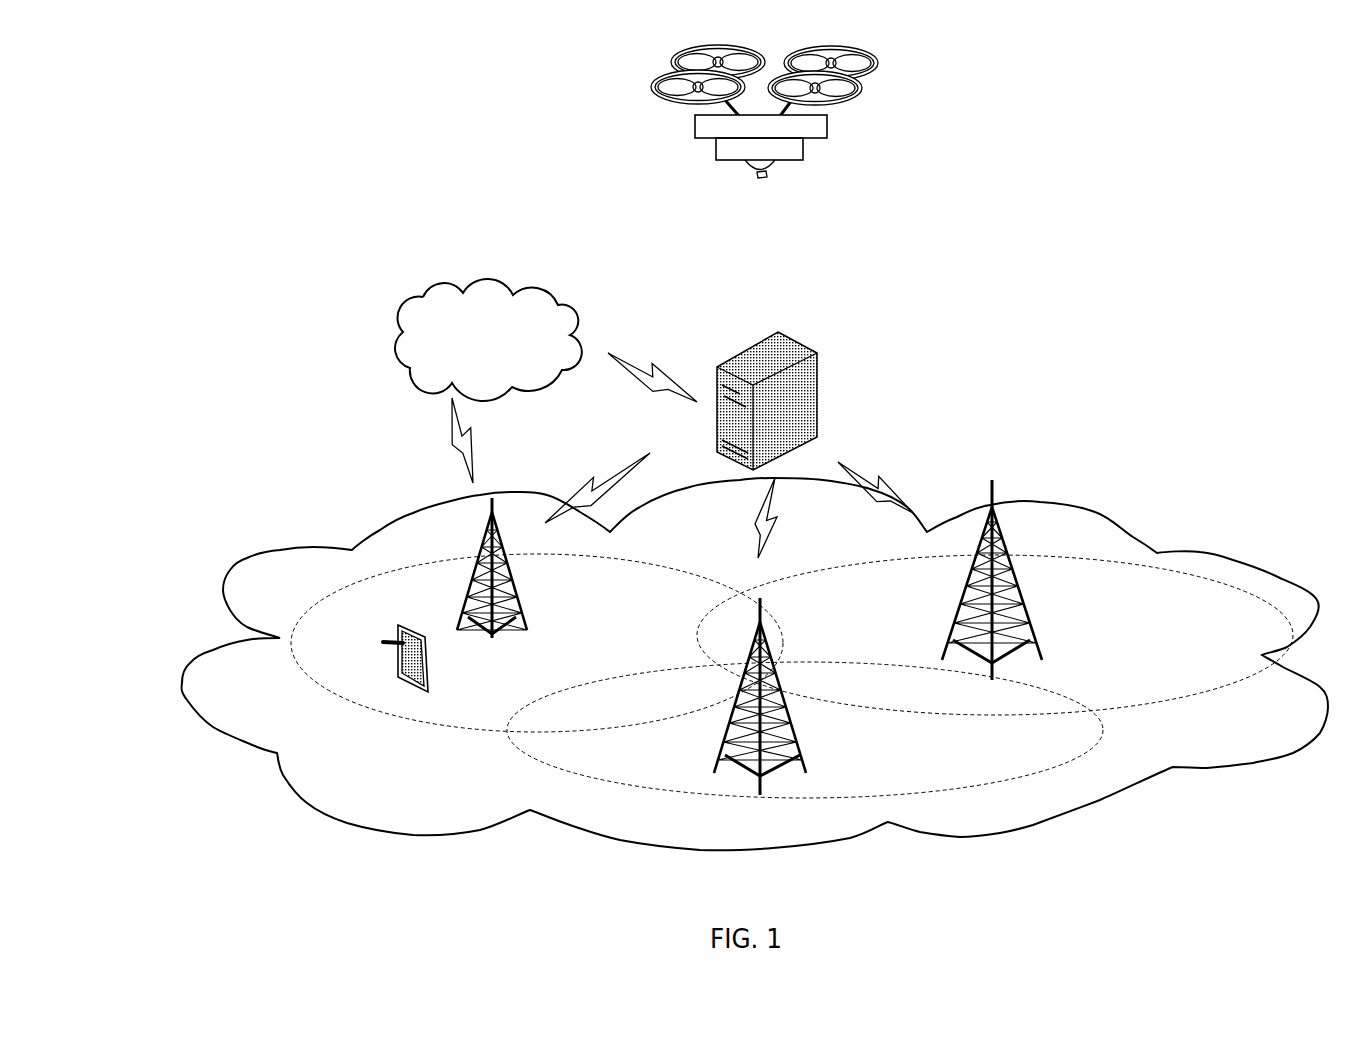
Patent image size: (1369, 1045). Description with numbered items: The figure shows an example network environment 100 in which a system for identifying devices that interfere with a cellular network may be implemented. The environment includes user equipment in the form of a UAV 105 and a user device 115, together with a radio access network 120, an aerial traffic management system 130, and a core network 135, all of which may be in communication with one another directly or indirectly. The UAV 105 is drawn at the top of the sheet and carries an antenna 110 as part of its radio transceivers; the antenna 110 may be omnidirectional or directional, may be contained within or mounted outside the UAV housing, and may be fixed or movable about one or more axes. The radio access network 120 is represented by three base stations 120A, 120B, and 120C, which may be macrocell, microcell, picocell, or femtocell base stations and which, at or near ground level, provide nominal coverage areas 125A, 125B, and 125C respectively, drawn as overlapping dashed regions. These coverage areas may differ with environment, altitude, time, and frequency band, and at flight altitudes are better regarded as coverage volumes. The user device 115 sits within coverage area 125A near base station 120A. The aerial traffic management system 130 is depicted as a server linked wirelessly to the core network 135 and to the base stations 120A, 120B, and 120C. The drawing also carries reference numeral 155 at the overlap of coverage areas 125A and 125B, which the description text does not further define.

The network environment 100 is at (222, 90).
The UAV 105 is at (693, 124).
The antenna 110 is at (745, 166).
The user device 115 is at (398, 626).
The radio access network 120 is at (263, 555).
The base station 120A is at (478, 547).
The base station 120B is at (792, 723).
The base station 120C is at (965, 598).
The nominal coverage area 125A is at (313, 682).
The nominal coverage area 125B is at (993, 783).
The nominal coverage area 125C is at (1195, 697).
The aerial traffic management system 130 is at (818, 373).
The core network 135 is at (506, 351).
The overlap region 155 is at (533, 722).